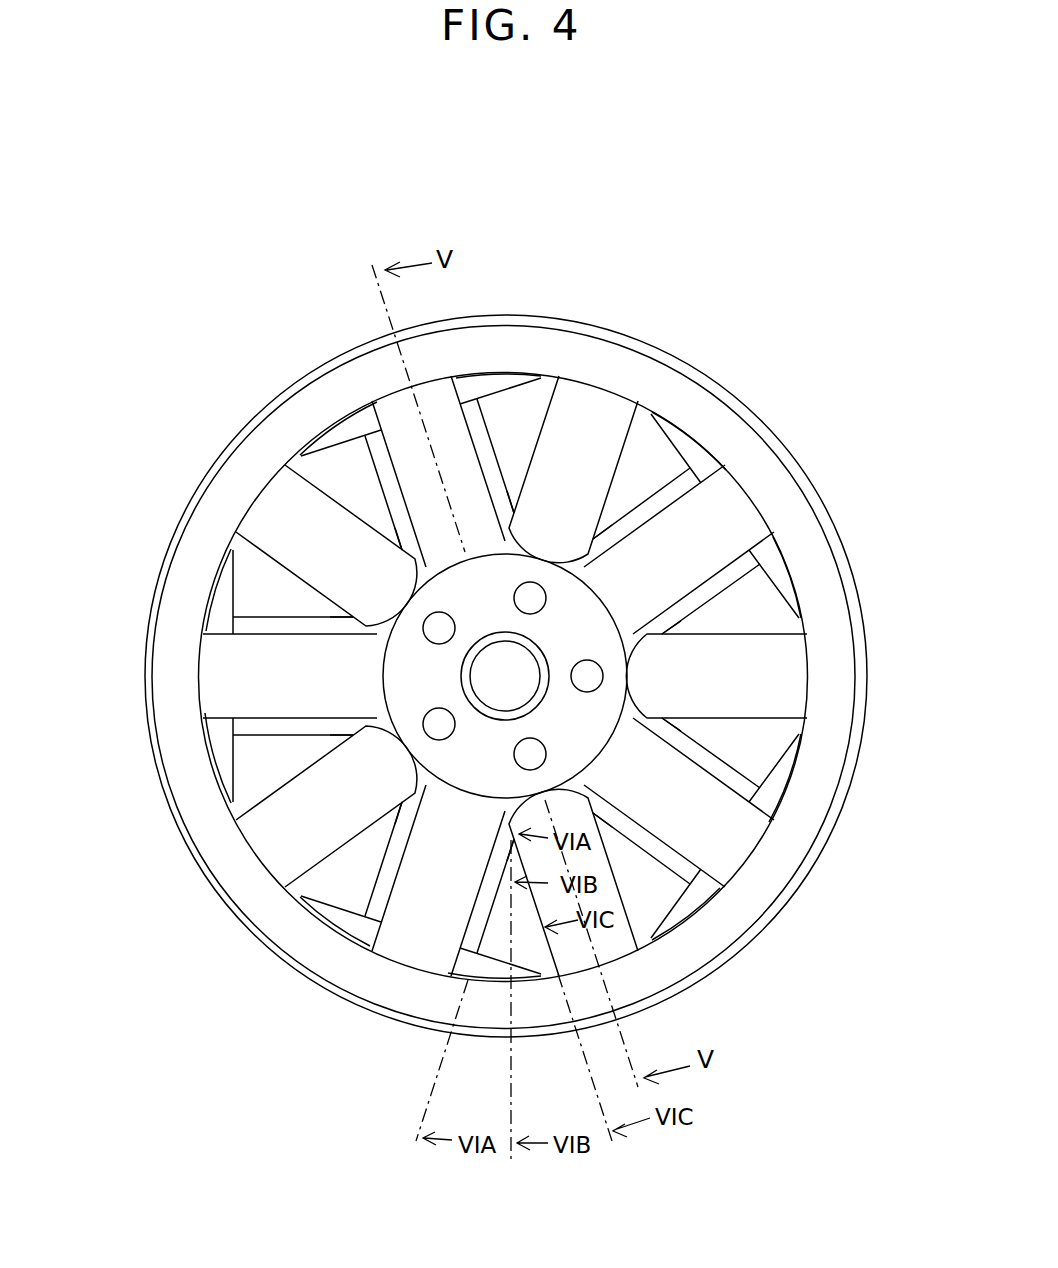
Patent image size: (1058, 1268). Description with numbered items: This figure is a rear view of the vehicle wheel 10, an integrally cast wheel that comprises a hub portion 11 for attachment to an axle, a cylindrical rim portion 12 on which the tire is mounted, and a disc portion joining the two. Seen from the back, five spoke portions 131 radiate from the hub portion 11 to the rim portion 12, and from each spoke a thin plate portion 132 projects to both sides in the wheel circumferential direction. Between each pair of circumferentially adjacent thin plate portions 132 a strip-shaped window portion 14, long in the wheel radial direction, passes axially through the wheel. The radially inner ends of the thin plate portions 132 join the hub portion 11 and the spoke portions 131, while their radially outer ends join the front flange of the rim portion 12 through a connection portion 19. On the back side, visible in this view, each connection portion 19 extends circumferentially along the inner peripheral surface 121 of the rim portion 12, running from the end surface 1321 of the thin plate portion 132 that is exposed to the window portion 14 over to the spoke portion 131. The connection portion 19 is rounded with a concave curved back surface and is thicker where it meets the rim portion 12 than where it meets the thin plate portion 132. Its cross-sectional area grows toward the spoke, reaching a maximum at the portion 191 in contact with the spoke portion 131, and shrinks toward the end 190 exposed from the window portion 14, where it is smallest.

The vehicle wheel 10 is at (500, 288).
The hub portion 11 is at (477, 557).
The rim portion 12 is at (832, 820).
The inner peripheral surface 121 is at (800, 772).
The spoke portion 131 is at (388, 392).
The thin plate portion 132 is at (262, 592).
The end surface 1321 is at (720, 748).
The window portion 14 is at (588, 402).
The connection portion 19 is at (336, 435).
The end 190 is at (250, 826).
The portion in contact with the spoke portion 191 is at (772, 552).